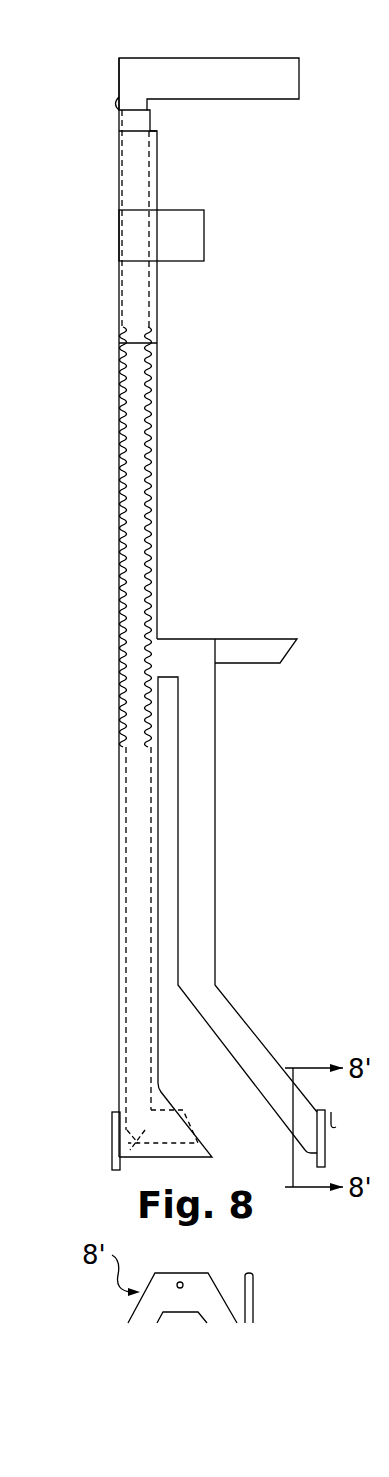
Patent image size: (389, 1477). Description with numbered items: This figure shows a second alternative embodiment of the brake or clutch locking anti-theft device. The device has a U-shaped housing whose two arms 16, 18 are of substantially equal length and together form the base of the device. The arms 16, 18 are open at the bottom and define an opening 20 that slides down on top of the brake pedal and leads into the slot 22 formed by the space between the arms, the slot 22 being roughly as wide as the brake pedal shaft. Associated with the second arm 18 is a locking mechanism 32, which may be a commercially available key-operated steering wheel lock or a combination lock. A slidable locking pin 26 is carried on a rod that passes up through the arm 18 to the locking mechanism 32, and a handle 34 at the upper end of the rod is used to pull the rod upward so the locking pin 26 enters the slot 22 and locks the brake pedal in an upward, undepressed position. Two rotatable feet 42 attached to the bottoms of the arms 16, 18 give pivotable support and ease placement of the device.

The arm 16 is at (120, 950).
The second arm 18 is at (212, 930).
The opening 20 is at (230, 1112).
The slot 22 is at (172, 868).
The locking pin 26 is at (112, 1157).
The locking mechanism 32 is at (190, 237).
The handle 34 is at (181, 80).
The rotatable feet 42 is at (112, 1125).